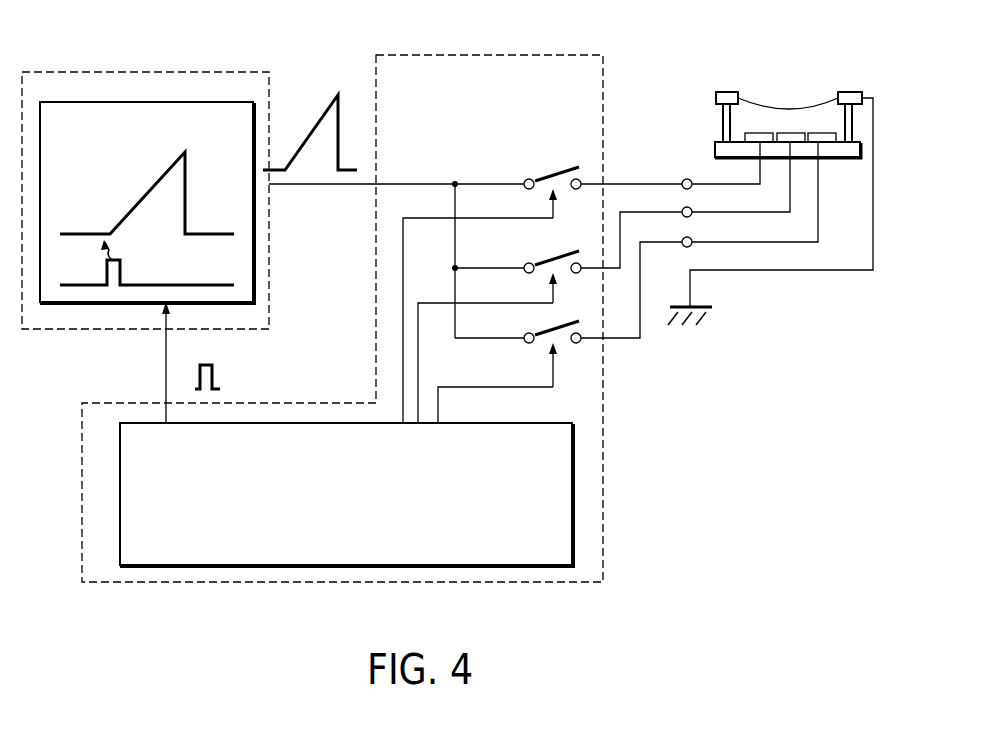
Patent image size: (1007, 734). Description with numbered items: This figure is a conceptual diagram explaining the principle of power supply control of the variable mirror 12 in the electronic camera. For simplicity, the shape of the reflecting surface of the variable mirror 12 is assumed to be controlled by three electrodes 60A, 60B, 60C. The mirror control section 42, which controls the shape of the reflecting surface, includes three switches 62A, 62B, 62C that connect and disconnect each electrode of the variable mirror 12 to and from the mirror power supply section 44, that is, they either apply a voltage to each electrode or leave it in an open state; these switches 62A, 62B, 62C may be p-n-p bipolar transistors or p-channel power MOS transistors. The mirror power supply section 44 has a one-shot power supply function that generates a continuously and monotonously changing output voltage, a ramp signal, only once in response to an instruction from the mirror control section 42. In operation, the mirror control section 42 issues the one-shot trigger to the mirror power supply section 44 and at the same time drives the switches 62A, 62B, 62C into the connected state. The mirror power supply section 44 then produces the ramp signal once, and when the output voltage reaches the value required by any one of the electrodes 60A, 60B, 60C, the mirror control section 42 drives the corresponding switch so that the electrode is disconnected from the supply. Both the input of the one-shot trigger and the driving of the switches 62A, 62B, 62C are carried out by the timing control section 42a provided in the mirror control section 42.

The variable mirror 12 is at (785, 113).
The mirror control section 42 is at (523, 55).
The timing control section 42a is at (550, 422).
The mirror power supply section 44 is at (183, 72).
The electrode 60A is at (683, 180).
The electrode 60B is at (683, 209).
The electrode 60C is at (683, 239).
The switch 62A is at (550, 175).
The switch 62B is at (550, 262).
The switch 62C is at (545, 343).